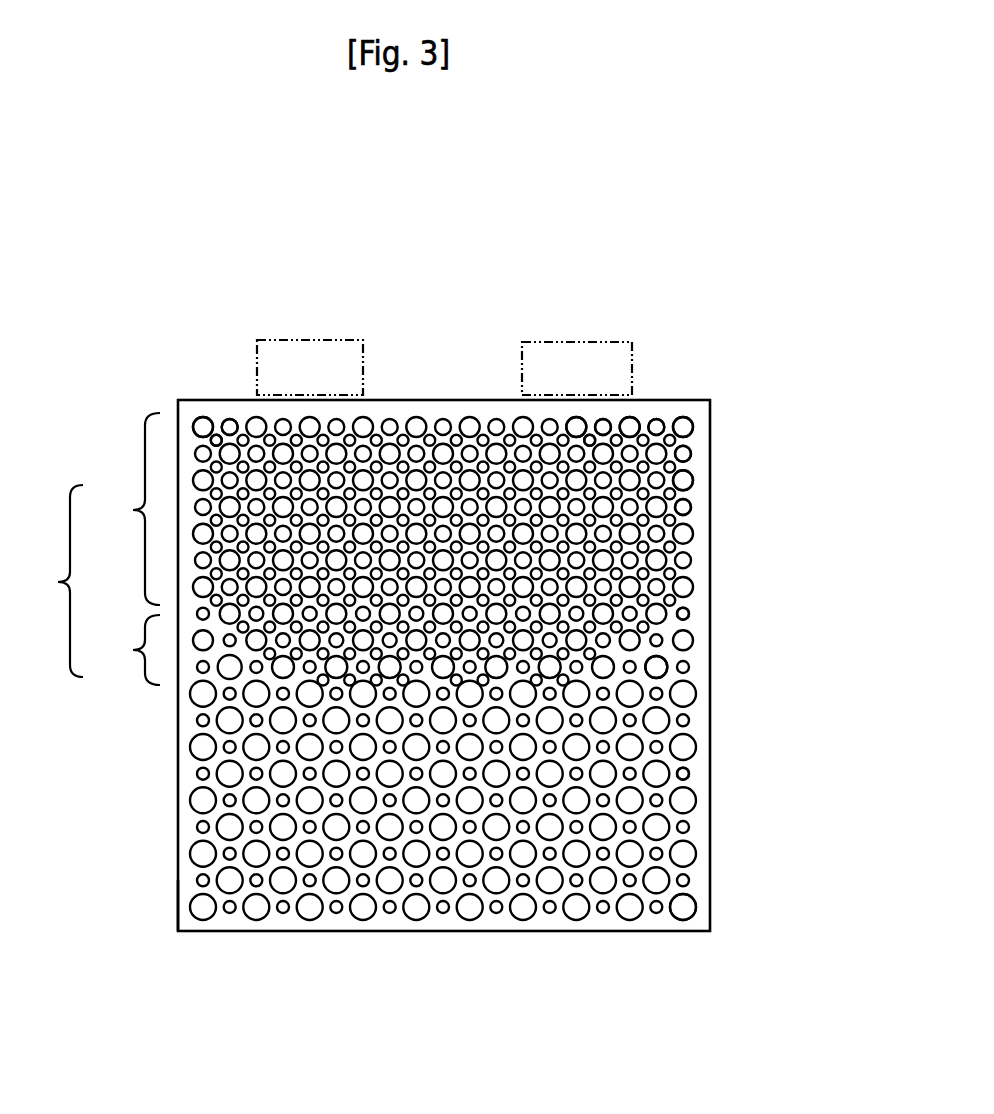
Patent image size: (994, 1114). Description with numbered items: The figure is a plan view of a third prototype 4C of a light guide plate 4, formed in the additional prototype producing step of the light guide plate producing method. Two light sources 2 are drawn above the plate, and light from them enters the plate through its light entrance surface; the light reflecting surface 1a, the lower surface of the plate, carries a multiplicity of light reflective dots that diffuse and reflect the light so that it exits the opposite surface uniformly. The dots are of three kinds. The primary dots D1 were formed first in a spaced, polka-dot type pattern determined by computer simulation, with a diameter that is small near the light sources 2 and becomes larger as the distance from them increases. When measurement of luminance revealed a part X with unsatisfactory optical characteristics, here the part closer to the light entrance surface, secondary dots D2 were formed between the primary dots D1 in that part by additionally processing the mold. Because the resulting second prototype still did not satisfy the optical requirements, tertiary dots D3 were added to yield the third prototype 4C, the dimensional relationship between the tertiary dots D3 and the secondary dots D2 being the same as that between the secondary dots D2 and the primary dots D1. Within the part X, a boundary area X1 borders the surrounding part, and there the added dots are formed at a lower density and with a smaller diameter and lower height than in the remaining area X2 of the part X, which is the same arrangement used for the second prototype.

The light source 2 is at (312, 340).
The light guide plate 4 is at (366, 665).
The third prototype 4C is at (174, 882).
The light reflecting surface 1a is at (180, 915).
The primary dots D1 is at (203, 420).
The secondary dots D2 is at (224, 424).
The tertiary dots D3 is at (234, 420).
The part X is at (56, 581).
The boundary area X1 is at (123, 650).
The remaining area X2 is at (123, 509).